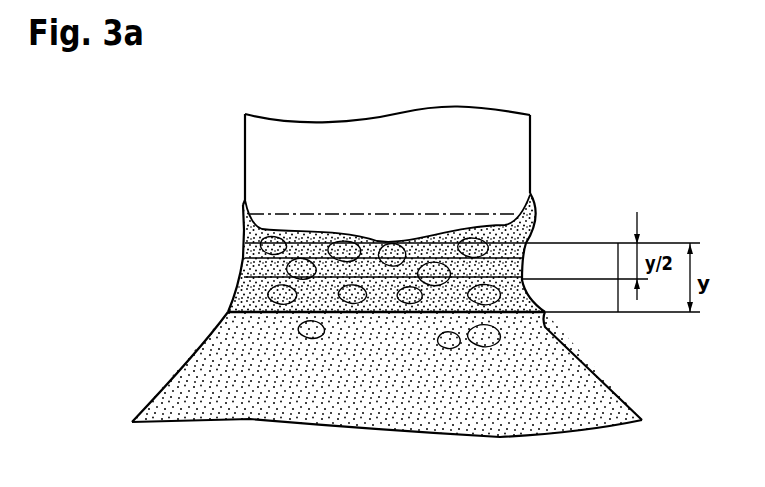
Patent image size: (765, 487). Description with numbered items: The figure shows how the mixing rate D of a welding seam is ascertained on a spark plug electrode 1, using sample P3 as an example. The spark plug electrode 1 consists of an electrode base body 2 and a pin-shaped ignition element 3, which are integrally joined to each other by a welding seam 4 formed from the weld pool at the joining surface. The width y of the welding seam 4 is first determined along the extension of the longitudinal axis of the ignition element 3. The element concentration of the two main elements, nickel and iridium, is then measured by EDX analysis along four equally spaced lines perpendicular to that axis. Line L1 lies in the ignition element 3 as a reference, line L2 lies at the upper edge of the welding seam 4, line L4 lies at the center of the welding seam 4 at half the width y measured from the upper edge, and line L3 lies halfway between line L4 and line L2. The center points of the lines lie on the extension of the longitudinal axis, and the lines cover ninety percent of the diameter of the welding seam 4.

The spark plug electrode 1 is at (184, 153).
The electrode base body 2 is at (600, 397).
The ignition element 3 is at (520, 143).
The welding seam 4 is at (236, 298).
The line L1 is at (242, 199).
The line L2 is at (245, 228).
The line L3 is at (244, 247).
The line L4 is at (243, 268).